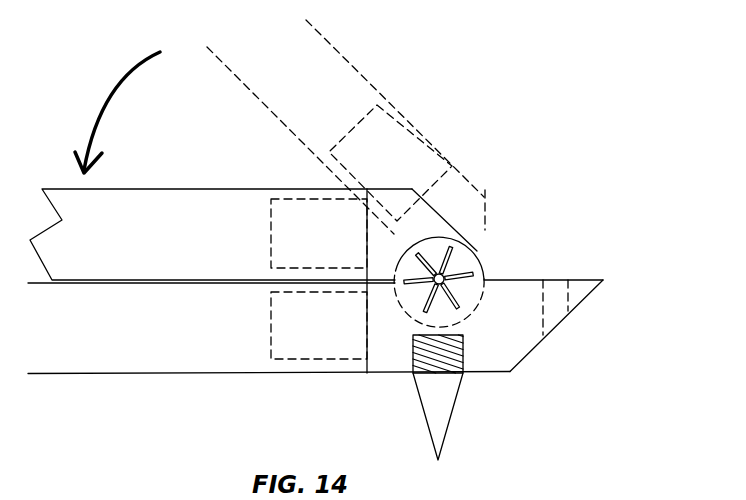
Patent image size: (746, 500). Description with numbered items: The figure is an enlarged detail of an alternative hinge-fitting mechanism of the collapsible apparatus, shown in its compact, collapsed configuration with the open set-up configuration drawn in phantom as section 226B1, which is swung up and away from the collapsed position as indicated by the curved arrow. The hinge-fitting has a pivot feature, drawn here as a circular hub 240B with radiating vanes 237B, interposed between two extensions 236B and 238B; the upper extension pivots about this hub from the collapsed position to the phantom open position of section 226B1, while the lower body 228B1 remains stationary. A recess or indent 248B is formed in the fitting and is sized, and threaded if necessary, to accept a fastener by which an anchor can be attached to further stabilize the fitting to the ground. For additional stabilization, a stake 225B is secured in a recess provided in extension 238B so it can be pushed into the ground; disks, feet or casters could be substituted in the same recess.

The open configuration section 226B1 is at (360, 78).
The extension 236B is at (486, 182).
The blades 237B is at (452, 251).
The recess/indent 248B is at (558, 280).
The hub 240B is at (478, 302).
The extension 238B is at (385, 377).
The stake 225B is at (415, 401).
The second body portion 228B1 is at (78, 338).